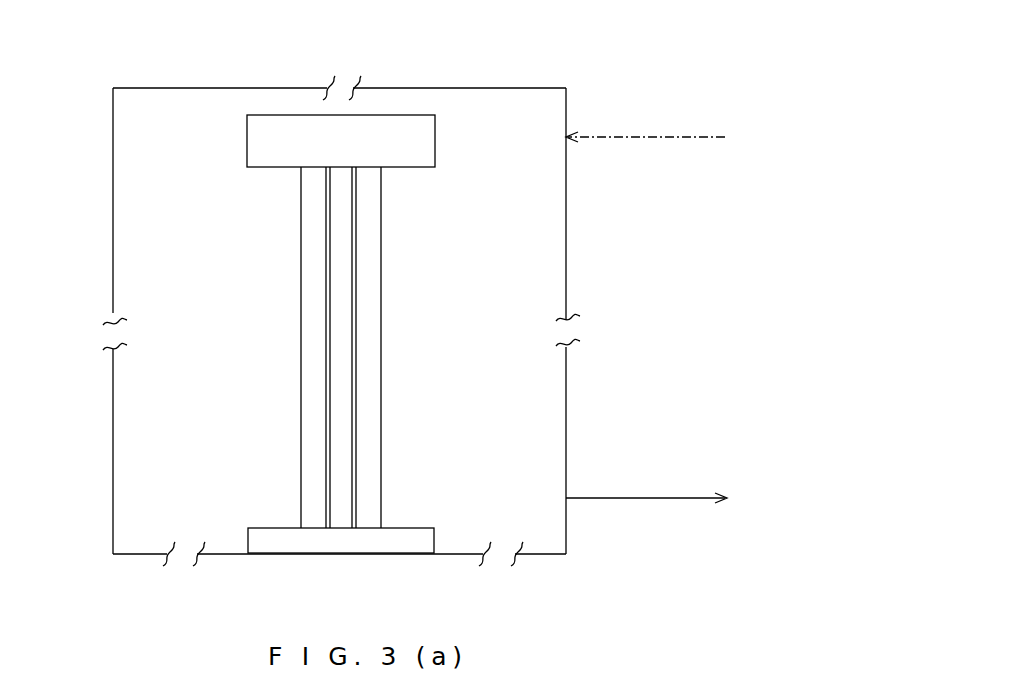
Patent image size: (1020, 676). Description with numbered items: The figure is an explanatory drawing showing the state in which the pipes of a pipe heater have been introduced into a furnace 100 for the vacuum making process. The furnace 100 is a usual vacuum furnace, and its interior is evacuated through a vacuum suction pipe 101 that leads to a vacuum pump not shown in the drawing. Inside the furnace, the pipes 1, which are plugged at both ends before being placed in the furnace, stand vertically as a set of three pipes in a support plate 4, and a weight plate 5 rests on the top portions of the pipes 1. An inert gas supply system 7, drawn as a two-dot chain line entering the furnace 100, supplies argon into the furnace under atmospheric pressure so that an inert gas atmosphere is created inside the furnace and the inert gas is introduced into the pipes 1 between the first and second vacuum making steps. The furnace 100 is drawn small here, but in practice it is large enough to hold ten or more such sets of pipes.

The pipe 1 is at (370, 363).
The support plate 4 is at (410, 537).
The weight plate 5 is at (250, 134).
The inert gas supply system 7 is at (687, 125).
The furnace 100 is at (113, 222).
The vacuum suction pipe 101 is at (648, 498).